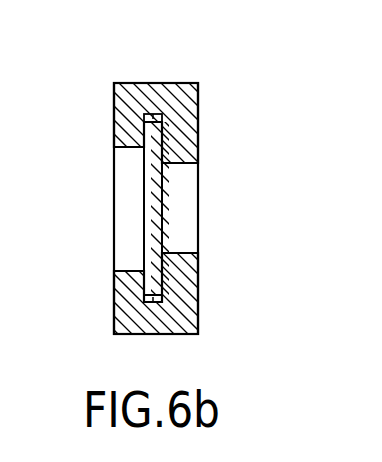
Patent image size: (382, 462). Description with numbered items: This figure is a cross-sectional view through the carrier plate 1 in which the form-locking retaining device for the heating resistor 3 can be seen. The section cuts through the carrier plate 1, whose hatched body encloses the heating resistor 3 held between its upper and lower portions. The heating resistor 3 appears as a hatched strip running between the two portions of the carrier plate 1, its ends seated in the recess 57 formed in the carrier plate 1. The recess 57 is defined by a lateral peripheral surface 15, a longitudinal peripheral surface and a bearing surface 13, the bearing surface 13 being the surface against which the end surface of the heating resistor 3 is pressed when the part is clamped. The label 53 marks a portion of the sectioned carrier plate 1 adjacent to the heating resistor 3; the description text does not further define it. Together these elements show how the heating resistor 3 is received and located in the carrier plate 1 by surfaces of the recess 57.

The carrier plate 1 is at (198, 94).
The bearing surface 13 is at (127, 122).
The lower housing block 53 is at (198, 154).
The heating resistor 3 is at (163, 217).
The lateral peripheral surface 15 is at (155, 114).
The recess 57 is at (158, 117).